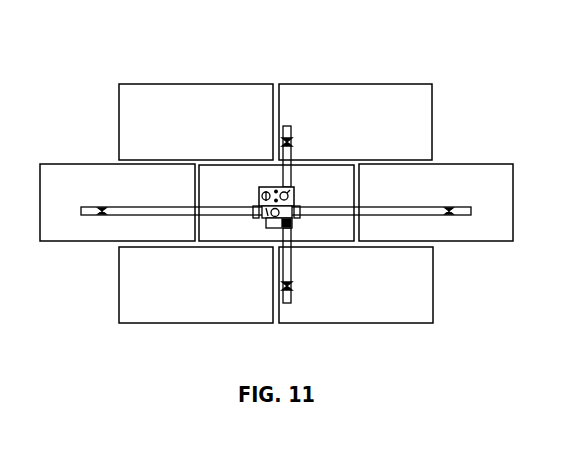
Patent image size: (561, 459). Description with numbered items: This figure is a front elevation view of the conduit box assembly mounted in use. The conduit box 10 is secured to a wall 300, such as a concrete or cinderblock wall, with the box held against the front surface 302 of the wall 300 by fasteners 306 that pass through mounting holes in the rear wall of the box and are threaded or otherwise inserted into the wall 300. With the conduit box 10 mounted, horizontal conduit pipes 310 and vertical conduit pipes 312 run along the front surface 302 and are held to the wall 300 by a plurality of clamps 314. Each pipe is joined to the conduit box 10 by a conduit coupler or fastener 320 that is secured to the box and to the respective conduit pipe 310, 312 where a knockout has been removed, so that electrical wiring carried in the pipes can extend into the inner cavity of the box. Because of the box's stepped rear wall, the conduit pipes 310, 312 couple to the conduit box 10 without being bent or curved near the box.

The conduit box 10 is at (260, 186).
The wall 300 is at (327, 84).
The front surface 302 is at (407, 105).
The fasteners 306 is at (265, 219).
The horizontal conduit pipes 310 is at (176, 207).
The vertical conduit pipes 312 is at (292, 164).
The clamps 314 is at (291, 142).
The conduit coupler or fastener 320 is at (250, 208).